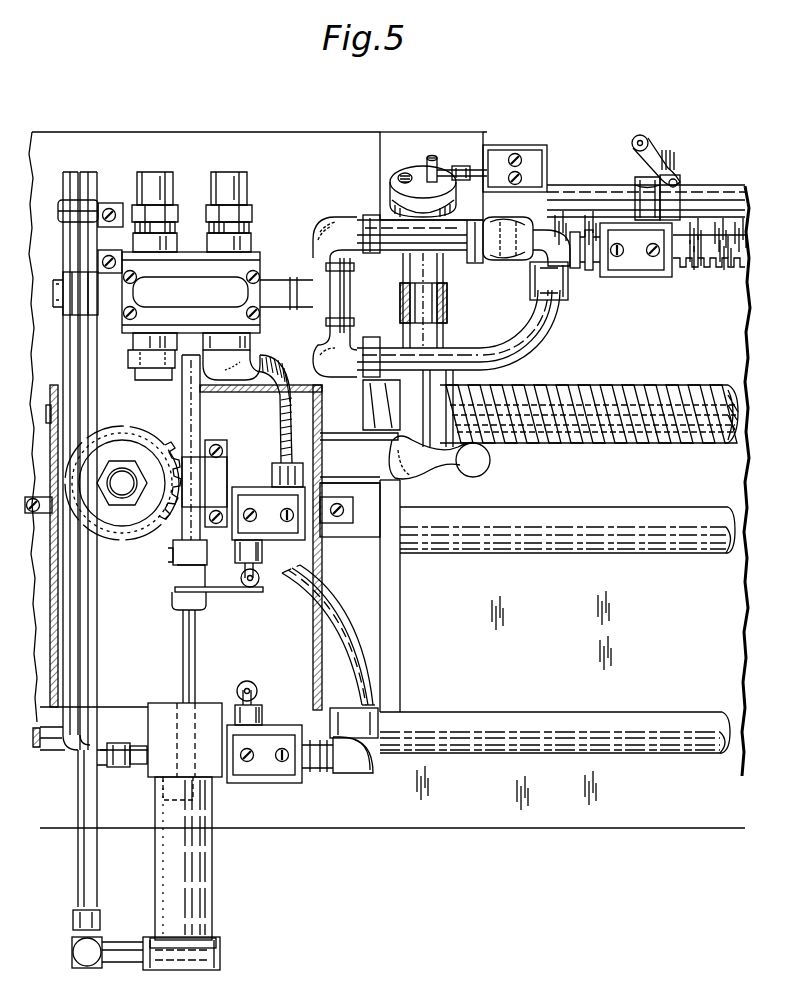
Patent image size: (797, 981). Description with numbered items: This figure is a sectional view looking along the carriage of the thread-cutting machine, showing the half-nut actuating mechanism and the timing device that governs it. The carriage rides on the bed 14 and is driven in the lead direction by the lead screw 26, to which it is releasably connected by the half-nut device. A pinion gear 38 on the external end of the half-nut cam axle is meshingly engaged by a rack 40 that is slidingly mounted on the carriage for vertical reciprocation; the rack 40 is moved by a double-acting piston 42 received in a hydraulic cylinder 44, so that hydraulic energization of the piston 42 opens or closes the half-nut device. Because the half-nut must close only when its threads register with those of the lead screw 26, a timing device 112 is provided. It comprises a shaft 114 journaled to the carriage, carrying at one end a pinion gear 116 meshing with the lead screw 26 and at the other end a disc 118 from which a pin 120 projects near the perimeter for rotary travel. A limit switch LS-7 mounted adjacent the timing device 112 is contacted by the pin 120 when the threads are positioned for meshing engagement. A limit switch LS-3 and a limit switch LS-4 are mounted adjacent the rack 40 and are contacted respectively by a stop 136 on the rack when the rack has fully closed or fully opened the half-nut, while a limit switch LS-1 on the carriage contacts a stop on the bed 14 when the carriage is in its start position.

The bed 14 is at (530, 820).
The lead screw 26 is at (590, 443).
The pinion gear 38 is at (137, 528).
The rack 40 is at (183, 577).
The double-acting piston 42 is at (163, 782).
The hydraulic cylinder 44 is at (197, 897).
The timing device 112 is at (420, 150).
The shaft 114 is at (425, 320).
The pinion gear 116 is at (393, 430).
The disc 118 is at (403, 177).
The pin 120 is at (446, 167).
The stop 136 is at (242, 587).
The limit switch LS-1 is at (645, 263).
The limit switch LS-3 is at (263, 503).
The limit switch LS-4 is at (282, 772).
The limit switch LS-7 is at (565, 168).